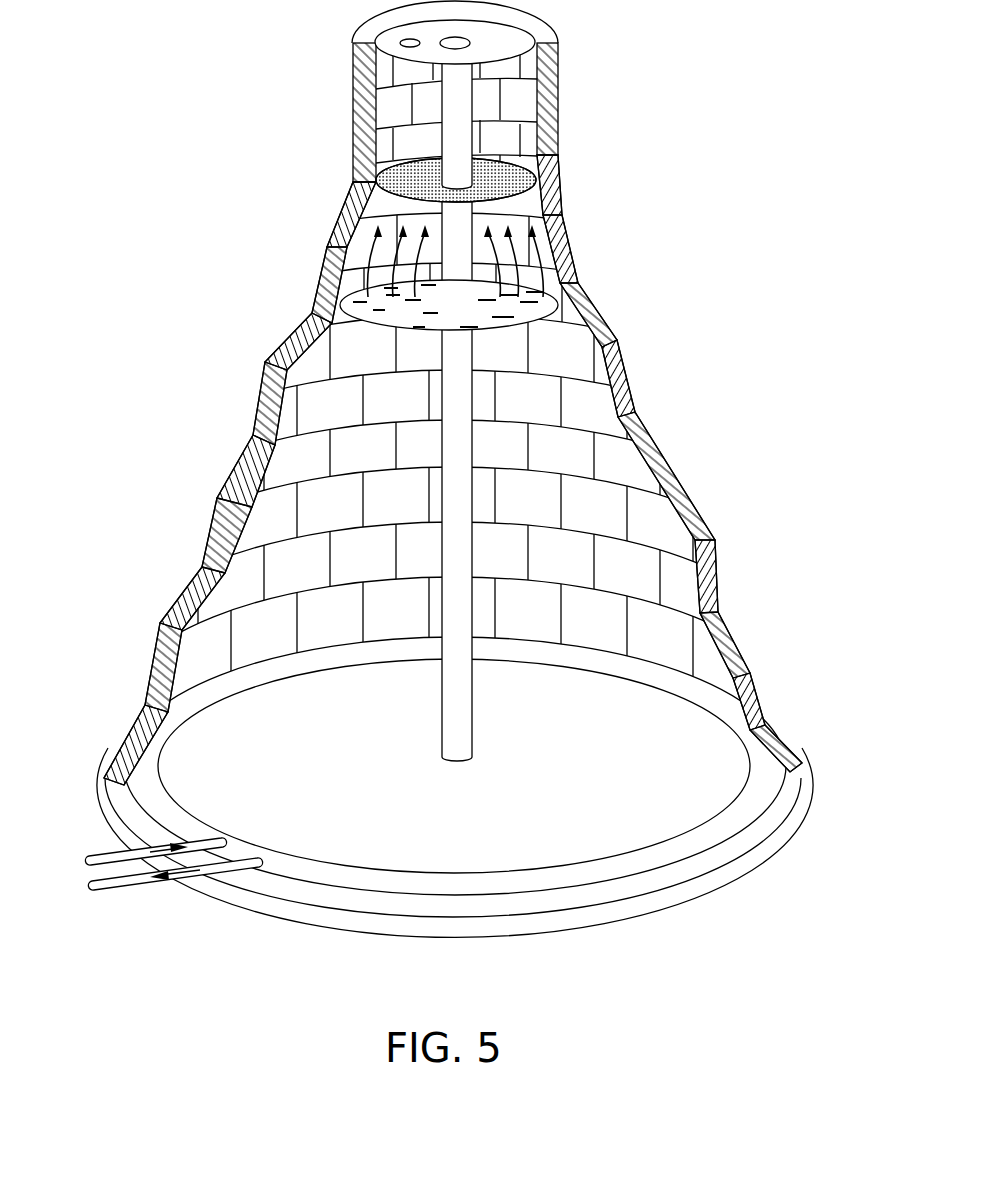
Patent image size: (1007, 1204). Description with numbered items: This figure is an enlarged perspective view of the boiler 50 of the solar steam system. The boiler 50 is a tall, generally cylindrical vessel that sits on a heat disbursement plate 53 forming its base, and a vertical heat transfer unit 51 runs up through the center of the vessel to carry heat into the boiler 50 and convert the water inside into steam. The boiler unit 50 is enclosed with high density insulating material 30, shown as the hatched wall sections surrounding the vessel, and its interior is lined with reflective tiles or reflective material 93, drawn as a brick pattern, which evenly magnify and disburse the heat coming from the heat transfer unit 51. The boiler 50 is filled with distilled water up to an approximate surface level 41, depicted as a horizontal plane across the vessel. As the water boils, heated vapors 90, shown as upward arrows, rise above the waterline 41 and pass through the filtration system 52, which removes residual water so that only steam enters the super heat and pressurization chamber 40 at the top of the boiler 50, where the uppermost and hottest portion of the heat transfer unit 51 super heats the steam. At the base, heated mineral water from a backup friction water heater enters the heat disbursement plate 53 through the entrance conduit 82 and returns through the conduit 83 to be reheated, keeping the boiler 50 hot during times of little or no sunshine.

The high density insulating material 30 is at (455, 480).
The super heat and pressurization chamber 40 is at (558, 110).
The water surface level 41 is at (558, 283).
The boiler 50 is at (256, 415).
The heat transfer unit 51 is at (463, 397).
The filtration system 52 is at (522, 167).
The heat disbursement plate 53 is at (592, 778).
The entrance conduit 82 is at (97, 858).
The return conduit 83 is at (108, 884).
The heated vapors 90 is at (372, 262).
The reflective tiles 93 is at (402, 118).